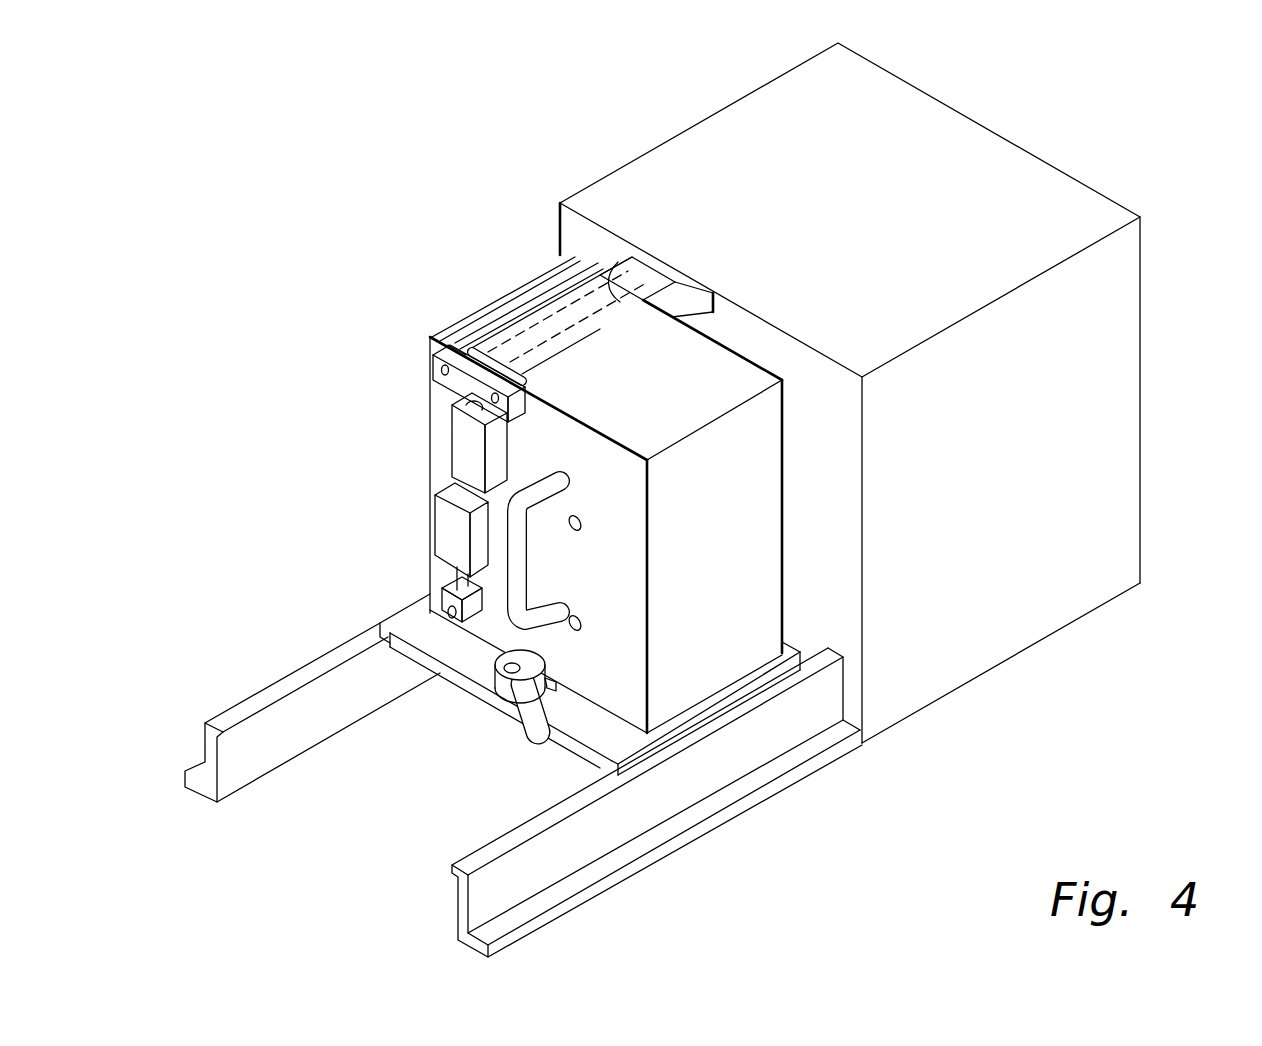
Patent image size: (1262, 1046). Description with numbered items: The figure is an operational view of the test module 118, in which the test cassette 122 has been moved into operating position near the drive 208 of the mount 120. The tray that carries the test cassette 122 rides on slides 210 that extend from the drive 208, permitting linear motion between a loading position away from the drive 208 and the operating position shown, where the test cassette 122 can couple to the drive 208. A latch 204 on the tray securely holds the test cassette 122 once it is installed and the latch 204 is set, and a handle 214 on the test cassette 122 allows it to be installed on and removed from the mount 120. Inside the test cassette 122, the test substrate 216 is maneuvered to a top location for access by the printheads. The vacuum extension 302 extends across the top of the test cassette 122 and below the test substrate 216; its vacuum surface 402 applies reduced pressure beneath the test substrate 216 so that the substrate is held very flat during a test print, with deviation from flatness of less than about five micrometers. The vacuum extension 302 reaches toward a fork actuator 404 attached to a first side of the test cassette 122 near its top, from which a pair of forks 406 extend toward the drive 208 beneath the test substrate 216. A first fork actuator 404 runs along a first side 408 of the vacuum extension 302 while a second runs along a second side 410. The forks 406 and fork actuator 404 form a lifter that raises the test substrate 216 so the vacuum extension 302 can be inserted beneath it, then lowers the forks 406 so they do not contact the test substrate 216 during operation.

The test module 118 is at (674, 502).
The mount 120 is at (904, 393).
The test cassette 122 is at (430, 438).
The latch 204 is at (495, 678).
The drive 208 is at (1025, 638).
The slides 210 is at (185, 778).
The handle 214 is at (540, 633).
The test substrate 216 is at (523, 313).
The vacuum extension 302 is at (473, 347).
The vacuum surface 402 is at (577, 313).
The fork actuator 404 is at (457, 380).
The forks 406 is at (523, 382).
The first side of the vacuum extension 408 is at (648, 278).
The second side of the vacuum extension 410 is at (615, 265).